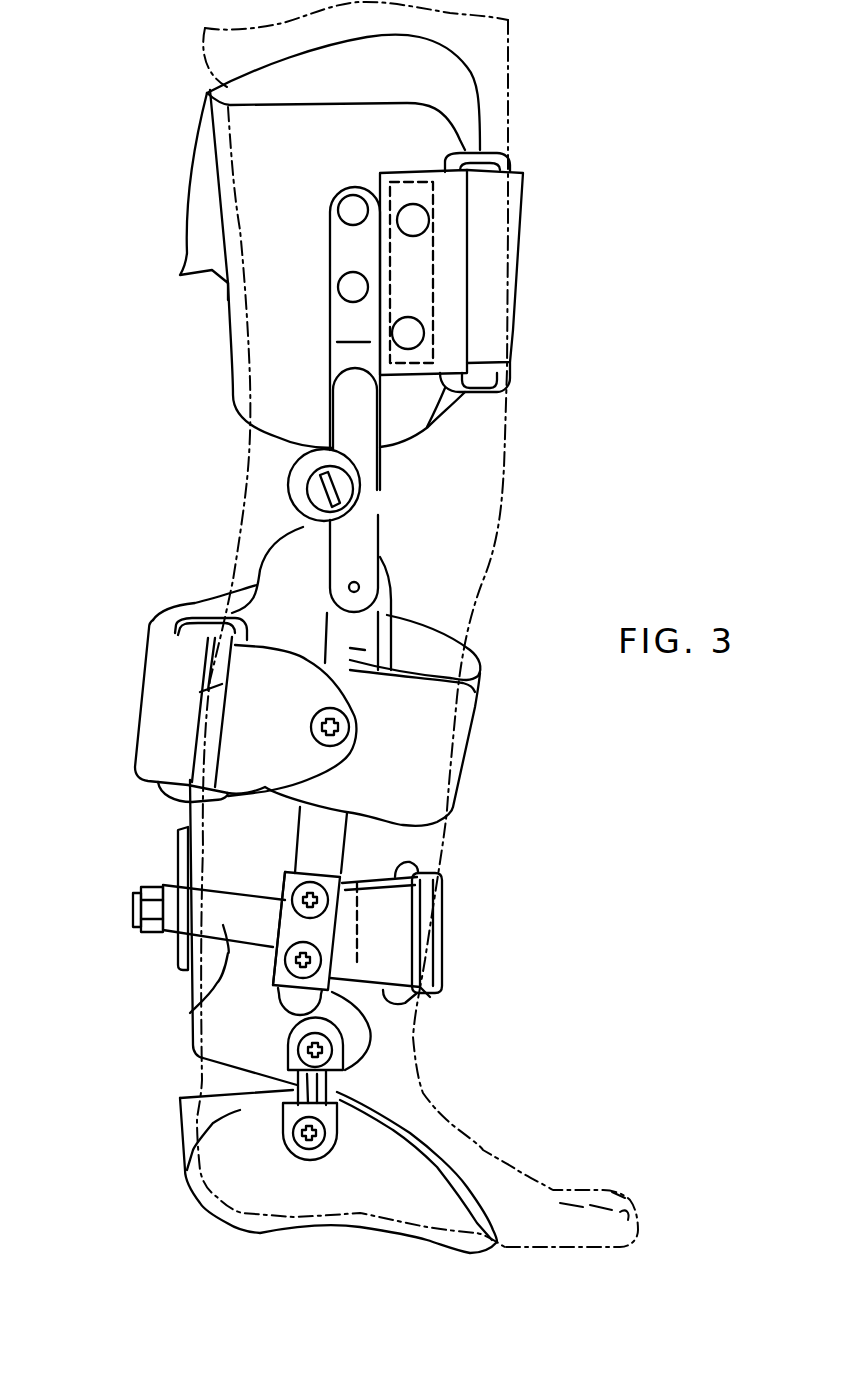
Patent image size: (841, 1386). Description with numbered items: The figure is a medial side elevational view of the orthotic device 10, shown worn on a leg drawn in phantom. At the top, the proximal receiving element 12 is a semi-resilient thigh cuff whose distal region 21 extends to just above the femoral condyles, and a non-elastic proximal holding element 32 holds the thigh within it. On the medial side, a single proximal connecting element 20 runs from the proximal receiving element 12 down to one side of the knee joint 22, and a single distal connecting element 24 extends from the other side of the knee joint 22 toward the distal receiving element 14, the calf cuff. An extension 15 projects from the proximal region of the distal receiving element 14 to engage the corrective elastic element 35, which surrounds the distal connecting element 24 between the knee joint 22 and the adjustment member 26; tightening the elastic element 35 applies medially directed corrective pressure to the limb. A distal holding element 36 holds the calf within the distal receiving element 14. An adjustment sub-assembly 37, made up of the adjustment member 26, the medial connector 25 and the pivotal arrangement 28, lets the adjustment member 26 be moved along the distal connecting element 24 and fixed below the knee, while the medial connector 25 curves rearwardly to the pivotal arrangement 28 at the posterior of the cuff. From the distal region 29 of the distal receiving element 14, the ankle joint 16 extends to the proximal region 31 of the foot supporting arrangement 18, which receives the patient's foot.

The orthotic device 10 is at (552, 406).
The proximal receiving element 12 is at (257, 303).
The distal receiving element 14 is at (383, 593).
The extension 15 is at (283, 568).
The ankle joint 16 is at (330, 1087).
The foot supporting arrangement 18 is at (357, 1220).
The proximal connecting element 20 is at (342, 243).
The distal region 21 is at (263, 347).
The knee joint 22 is at (300, 492).
The distal connecting element 24 is at (312, 855).
The medial connector 25 is at (222, 923).
The adjustment member 26 is at (323, 927).
The pivotal arrangement 28 is at (138, 942).
The distal region 29 is at (250, 1045).
The proximal region 31 is at (245, 1118).
The proximal holding element 32 is at (203, 260).
The corrective elastic element 35 is at (467, 702).
The distal holding element 36 is at (430, 927).
The adjustment sub-assembly 37 is at (270, 955).